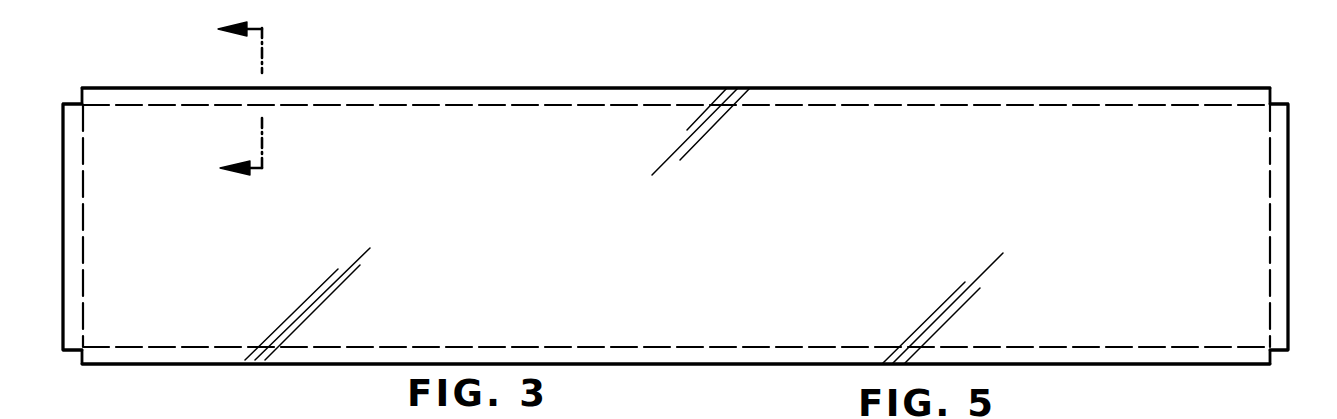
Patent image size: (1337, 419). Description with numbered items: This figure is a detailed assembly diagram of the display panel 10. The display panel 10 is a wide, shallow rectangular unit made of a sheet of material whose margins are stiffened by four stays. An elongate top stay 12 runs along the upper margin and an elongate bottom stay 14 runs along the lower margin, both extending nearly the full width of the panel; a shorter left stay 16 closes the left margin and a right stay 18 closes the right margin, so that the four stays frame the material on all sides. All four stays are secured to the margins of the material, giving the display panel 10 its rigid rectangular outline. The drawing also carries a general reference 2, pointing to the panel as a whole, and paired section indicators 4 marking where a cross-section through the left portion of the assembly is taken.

The panel assembly 2 is at (1101, 52).
The section line 4- 4 is at (231, 100).
The display panel 10 is at (982, 160).
The elongate top stay 12 is at (863, 97).
The elongate bottom stay 14 is at (776, 355).
The left stay 16 is at (75, 283).
The right stay 18 is at (1277, 137).